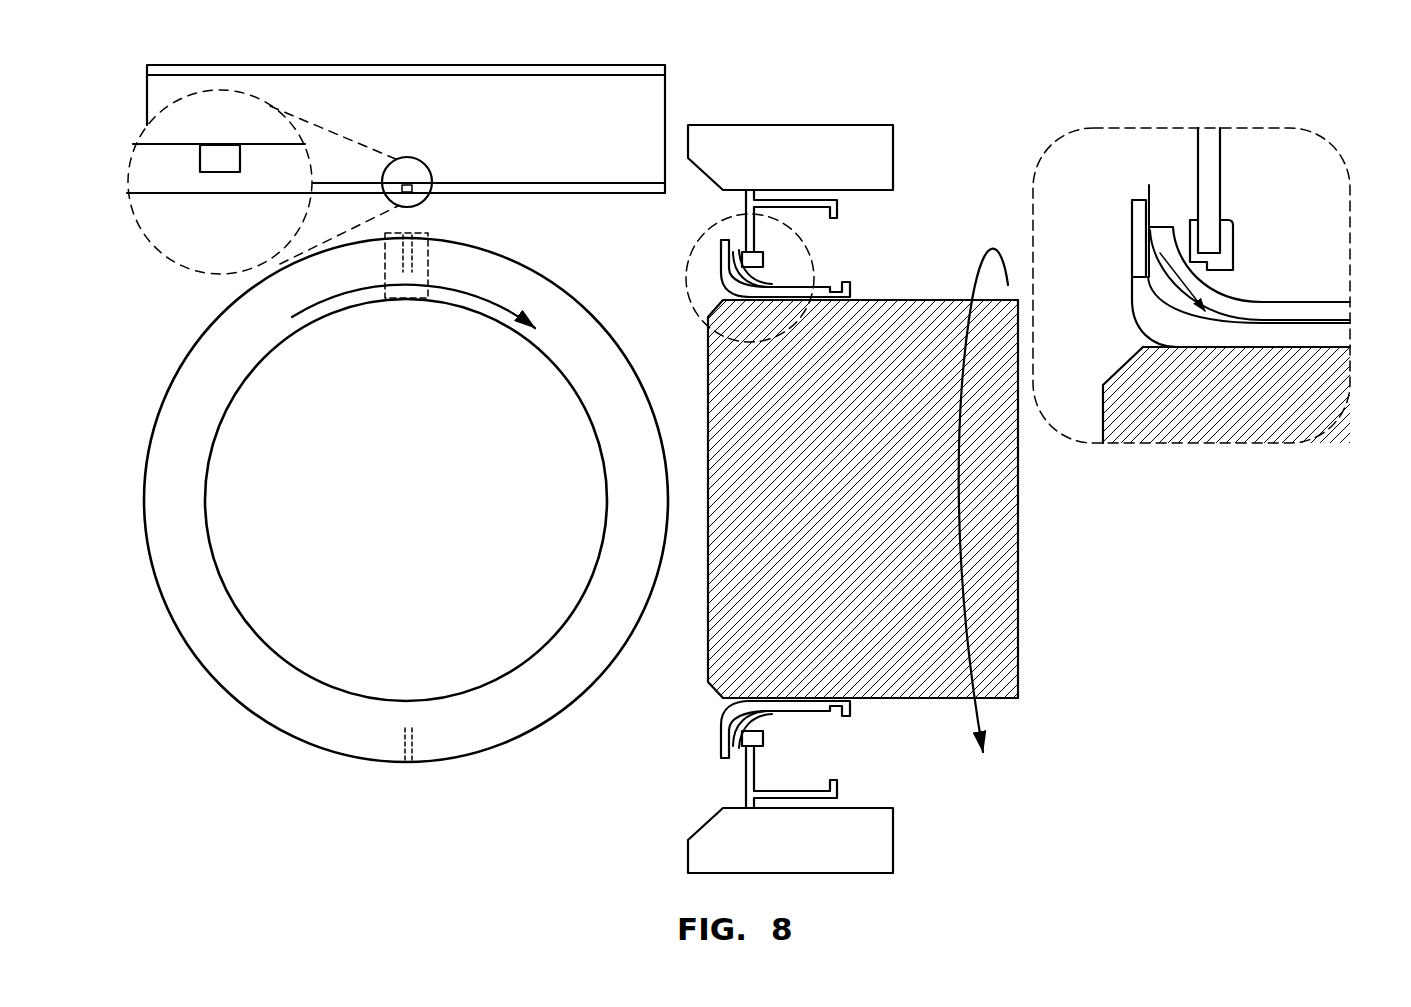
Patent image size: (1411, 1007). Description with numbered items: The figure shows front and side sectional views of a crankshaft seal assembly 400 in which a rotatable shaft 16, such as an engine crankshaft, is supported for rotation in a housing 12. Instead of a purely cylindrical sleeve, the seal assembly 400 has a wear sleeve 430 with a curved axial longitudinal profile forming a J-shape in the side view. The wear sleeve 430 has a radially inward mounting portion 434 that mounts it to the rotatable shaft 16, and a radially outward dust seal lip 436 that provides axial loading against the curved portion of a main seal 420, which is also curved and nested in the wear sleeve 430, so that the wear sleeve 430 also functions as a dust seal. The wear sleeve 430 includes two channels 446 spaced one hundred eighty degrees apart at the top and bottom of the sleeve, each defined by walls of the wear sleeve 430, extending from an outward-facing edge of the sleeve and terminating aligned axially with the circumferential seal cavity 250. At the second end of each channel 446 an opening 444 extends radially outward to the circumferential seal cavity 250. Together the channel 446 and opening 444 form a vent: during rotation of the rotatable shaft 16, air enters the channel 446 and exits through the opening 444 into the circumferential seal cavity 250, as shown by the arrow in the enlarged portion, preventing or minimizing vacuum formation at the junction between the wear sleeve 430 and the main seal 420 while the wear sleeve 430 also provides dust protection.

The housing 12 is at (777, 169).
The rotatable shaft 16 is at (396, 493).
The circumferential seal cavity 250 is at (710, 310).
The seal assembly 400 is at (826, 244).
The main seal 420 is at (787, 282).
The wear sleeve 430 is at (175, 520).
The radially inward mounting portion 434 is at (1337, 347).
The radially outward dust seal lip 436 is at (1140, 300).
The opening 444 is at (422, 262).
The channel 446 is at (200, 158).